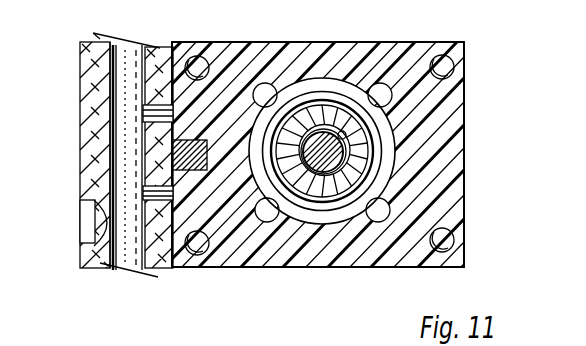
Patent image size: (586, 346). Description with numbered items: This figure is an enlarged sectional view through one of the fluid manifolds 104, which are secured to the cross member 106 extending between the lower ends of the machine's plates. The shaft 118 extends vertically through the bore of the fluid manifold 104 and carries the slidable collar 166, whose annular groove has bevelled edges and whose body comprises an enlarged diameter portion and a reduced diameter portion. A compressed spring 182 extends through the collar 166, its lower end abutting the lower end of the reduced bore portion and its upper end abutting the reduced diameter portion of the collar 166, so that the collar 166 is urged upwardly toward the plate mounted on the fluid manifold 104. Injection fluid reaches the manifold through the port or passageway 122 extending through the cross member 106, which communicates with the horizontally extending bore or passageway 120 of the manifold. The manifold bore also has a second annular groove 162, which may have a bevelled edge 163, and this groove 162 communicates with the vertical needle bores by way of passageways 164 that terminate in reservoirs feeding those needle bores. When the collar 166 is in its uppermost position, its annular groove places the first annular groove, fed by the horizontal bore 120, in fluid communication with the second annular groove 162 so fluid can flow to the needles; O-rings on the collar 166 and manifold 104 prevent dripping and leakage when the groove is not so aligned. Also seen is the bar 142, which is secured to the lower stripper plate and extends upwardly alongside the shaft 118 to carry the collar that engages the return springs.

The fluid manifold 104 is at (370, 267).
The passageways 164 is at (371, 87).
The second annular groove 162 is at (462, 97).
The slidable collar 166 is at (377, 157).
The bevelled edge 163 is at (375, 142).
The shaft 118 is at (340, 168).
The compressed spring 182 is at (346, 136).
The cross member 106 is at (80, 143).
The port or passageway 122 is at (121, 42).
The horizontally extending bore or passageway 120 is at (172, 108).
The bar 142 is at (173, 143).